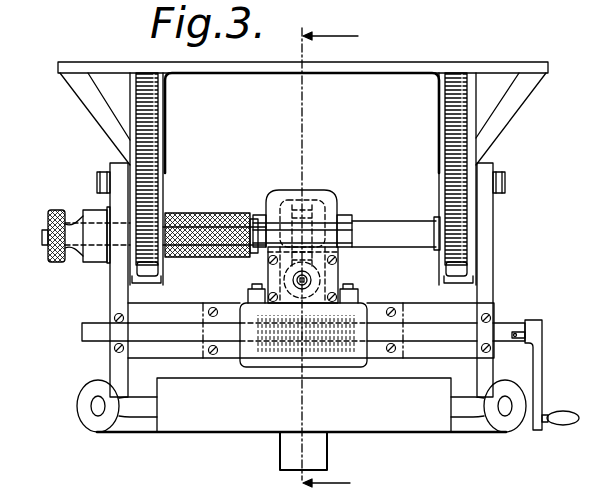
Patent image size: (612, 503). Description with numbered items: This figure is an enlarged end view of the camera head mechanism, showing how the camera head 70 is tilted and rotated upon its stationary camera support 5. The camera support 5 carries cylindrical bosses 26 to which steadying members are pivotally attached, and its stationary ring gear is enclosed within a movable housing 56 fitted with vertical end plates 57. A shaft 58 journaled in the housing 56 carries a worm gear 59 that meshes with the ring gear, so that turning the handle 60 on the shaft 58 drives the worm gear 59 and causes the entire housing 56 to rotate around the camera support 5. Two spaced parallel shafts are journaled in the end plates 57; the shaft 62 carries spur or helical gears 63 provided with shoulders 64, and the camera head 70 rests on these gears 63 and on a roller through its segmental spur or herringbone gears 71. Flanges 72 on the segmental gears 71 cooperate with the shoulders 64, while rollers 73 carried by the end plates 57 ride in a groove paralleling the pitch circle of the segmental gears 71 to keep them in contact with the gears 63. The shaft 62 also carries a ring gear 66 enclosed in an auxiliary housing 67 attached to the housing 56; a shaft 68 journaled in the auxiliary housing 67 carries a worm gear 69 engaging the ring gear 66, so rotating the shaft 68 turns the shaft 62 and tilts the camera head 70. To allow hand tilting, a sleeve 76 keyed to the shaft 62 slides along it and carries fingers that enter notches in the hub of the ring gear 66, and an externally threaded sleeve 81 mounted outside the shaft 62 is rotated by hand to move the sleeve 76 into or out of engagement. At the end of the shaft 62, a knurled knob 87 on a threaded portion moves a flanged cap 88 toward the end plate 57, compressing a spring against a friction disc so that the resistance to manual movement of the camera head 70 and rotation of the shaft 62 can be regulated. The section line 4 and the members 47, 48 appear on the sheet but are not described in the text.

The section line 4- 4 is at (340, 260).
The camera support 5 is at (143, 368).
The cylindrical bosses 26 is at (83, 420).
The track member 47 is at (191, 500).
The track member 48 is at (139, 493).
The housing 56 is at (450, 306).
The vertical end plates 57 is at (110, 203).
The shaft 58 is at (441, 338).
The worm gear 59 is at (340, 366).
The handle 60 is at (538, 366).
The shaft 62 is at (372, 229).
The spur or helical gears 63 is at (147, 276).
The shoulders 64 is at (130, 283).
The ring gear 66 is at (300, 195).
The auxiliary housing 67 is at (312, 192).
The shaft 68 is at (317, 291).
The worm gear 69 is at (318, 282).
The camera head 70 is at (505, 63).
The segmental spur or herringbone gears 71 is at (150, 75).
The flanges 72 is at (160, 117).
The rollers 73 is at (130, 165).
The sleeve 76 is at (223, 258).
The sleeve 81 is at (208, 213).
The knurled knob 87 is at (50, 212).
The flanged cap 88 is at (88, 259).